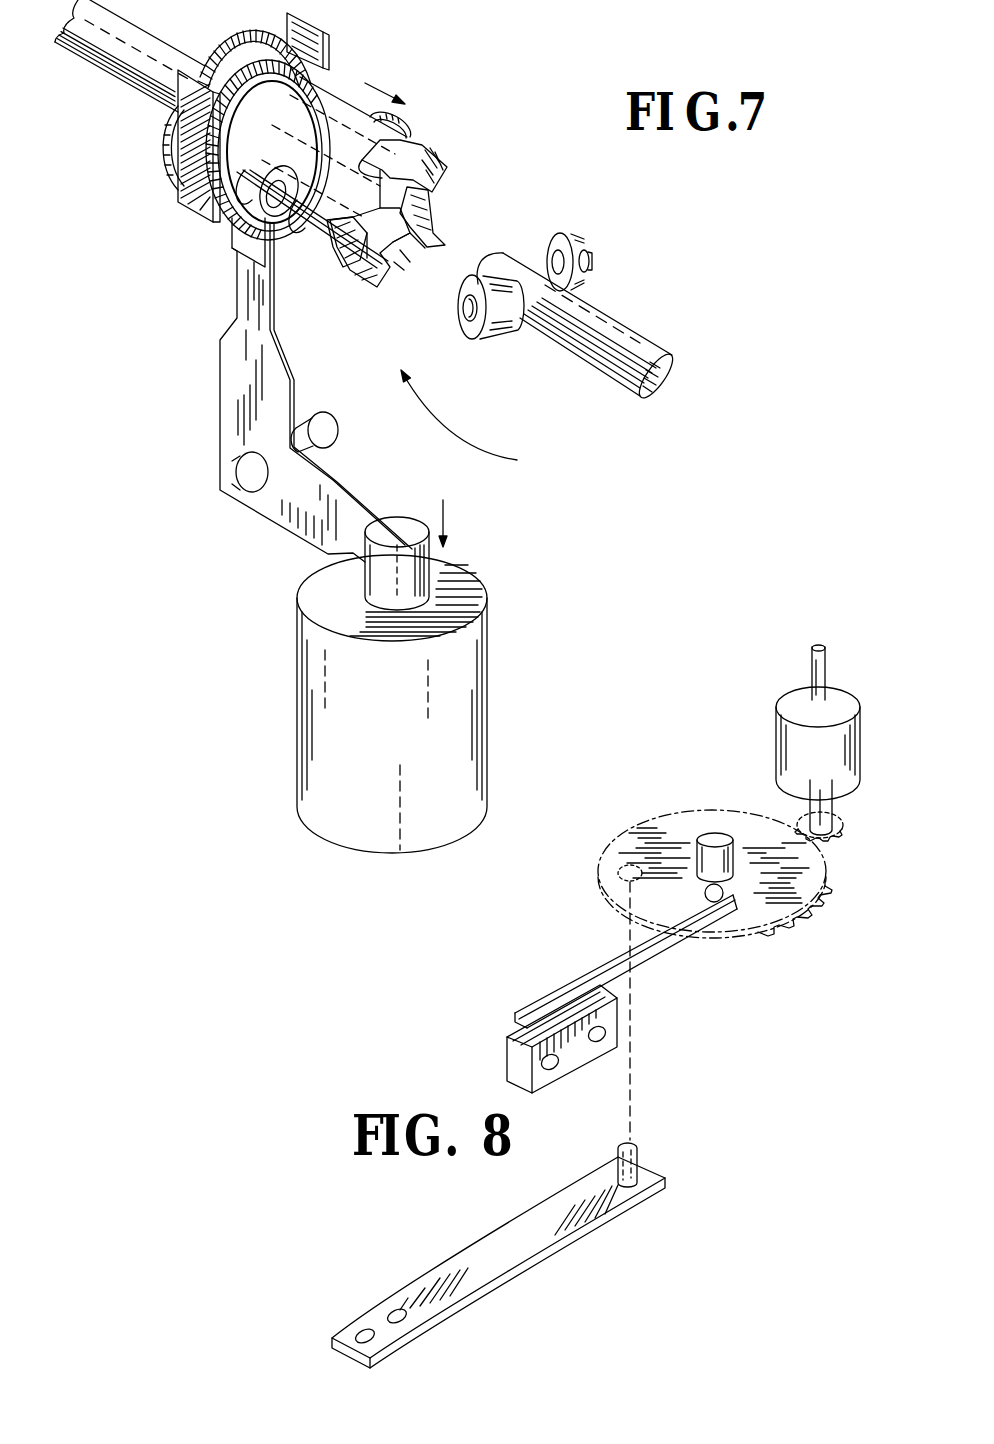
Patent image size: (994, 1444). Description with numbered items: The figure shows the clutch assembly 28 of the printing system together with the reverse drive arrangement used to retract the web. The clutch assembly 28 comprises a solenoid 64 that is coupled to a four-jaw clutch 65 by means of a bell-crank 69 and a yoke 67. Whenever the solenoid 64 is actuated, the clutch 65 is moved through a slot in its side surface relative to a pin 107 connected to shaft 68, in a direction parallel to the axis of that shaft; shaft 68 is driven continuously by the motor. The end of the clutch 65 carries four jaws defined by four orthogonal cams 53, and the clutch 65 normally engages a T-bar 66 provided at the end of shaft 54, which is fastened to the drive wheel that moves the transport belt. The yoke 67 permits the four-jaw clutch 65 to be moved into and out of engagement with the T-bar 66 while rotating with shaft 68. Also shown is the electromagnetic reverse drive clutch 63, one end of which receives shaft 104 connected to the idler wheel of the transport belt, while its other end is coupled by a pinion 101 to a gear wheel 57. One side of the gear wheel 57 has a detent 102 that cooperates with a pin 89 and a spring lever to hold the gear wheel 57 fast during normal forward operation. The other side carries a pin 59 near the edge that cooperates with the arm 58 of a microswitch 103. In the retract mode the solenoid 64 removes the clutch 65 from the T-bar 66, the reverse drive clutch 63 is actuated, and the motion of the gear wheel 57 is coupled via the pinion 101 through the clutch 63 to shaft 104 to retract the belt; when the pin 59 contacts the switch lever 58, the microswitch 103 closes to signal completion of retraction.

In FIG. 7, the clutch assembly 28 is at (490, 424).
In FIG. 7, the orthogonal cams 53 is at (450, 182).
In FIG. 7, the shaft 54 is at (632, 332).
In FIG. 8, the gear wheel 57 is at (795, 915).
In FIG. 8, the switch lever 58 is at (660, 945).
In FIG. 8, the pin 59 is at (706, 893).
In FIG. 8, the electromagnetic reverse drive clutch 63 is at (862, 738).
In FIG. 7, the solenoid 64 is at (486, 727).
In FIG. 7, the four-jaw clutch 65 is at (340, 95).
In FIG. 7, the T-bar 66 is at (528, 258).
In FIG. 7, the yoke 67 is at (198, 205).
In FIG. 7, the shaft 68 is at (118, 86).
In FIG. 7, the bell-crank 69 is at (245, 420).
In FIG. 8, the pin 89 is at (645, 1152).
In FIG. 8, the pinion 101 is at (845, 828).
In FIG. 8, the detent 102 is at (612, 876).
In FIG. 8, the microswitch 103 is at (575, 1073).
In FIG. 8, the shaft 104 is at (826, 652).
In FIG. 7, the pin 107 is at (410, 127).